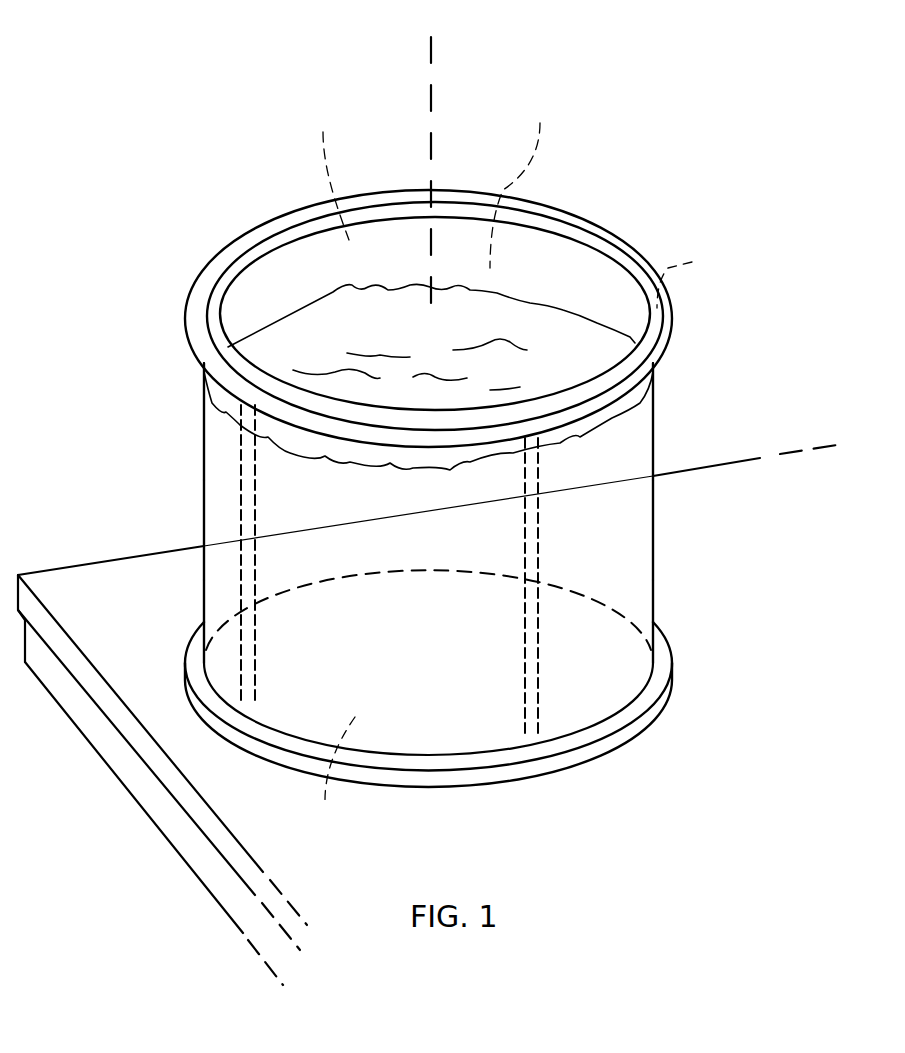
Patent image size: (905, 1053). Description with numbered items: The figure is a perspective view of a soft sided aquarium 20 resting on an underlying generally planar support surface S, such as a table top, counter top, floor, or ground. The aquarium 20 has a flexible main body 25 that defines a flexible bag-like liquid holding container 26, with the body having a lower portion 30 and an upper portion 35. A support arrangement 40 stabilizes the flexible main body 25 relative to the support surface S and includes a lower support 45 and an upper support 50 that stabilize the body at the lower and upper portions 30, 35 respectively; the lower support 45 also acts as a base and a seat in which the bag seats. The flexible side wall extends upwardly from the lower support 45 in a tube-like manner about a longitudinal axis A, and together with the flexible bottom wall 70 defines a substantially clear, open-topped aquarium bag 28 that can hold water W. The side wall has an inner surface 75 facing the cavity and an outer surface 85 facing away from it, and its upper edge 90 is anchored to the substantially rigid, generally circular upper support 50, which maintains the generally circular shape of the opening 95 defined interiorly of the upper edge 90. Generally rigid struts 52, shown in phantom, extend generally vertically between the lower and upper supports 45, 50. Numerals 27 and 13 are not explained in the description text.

The soft sided aquarium 20 is at (101, 365).
The aquarium bag 28 is at (392, 167).
The upper support 50 is at (269, 199).
The liquid holding container 26 is at (641, 217).
The inner surface 75 is at (590, 277).
The opening 95 is at (329, 173).
The ring feature 27 is at (523, 182).
The upper edge 90 is at (690, 279).
The upper portion 35 is at (689, 359).
The outer surface 85 is at (655, 456).
The flexible main body 25 is at (664, 519).
The lower portion 30 is at (696, 602).
The lower support 45 is at (675, 662).
The support arrangement 40 is at (691, 739).
The bottom 13 is at (410, 593).
The struts 52 is at (258, 486).
The bottom wall 70 is at (334, 773).
The water W is at (292, 348).
The support surface S is at (58, 590).
The longitudinal axis A is at (431, 49).